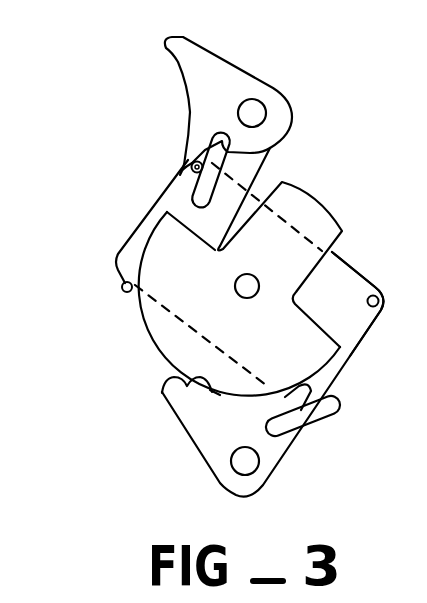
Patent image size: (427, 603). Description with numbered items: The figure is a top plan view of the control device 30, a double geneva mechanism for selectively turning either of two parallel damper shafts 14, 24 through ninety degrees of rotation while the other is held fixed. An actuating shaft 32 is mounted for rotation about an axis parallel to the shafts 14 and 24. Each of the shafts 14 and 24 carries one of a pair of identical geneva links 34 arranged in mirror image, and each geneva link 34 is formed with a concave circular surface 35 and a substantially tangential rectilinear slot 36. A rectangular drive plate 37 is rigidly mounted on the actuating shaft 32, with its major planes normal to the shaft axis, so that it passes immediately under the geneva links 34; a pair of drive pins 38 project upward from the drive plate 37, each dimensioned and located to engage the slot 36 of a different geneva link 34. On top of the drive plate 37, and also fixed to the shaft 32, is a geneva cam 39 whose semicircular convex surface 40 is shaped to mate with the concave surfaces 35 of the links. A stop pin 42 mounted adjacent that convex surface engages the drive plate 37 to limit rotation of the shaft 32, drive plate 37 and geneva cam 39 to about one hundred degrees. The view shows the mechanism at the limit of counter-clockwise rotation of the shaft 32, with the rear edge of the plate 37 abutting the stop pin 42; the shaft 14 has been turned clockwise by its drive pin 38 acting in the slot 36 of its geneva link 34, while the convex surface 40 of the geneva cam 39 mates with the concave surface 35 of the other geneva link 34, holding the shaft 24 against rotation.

The shaft 14 is at (258, 111).
The shaft 24 is at (240, 466).
The control device 30 is at (173, 147).
The actuating shaft 32 is at (235, 286).
The geneva link 34 is at (227, 67).
The concave circular surface 35 is at (182, 84).
The rectilinear slot 36 is at (265, 152).
The drive plate 37 is at (357, 330).
The drive pin 38 is at (183, 166).
The geneva cam 39 is at (267, 344).
The semicircular convex surface 40 is at (147, 340).
The stop pin 42 is at (122, 283).